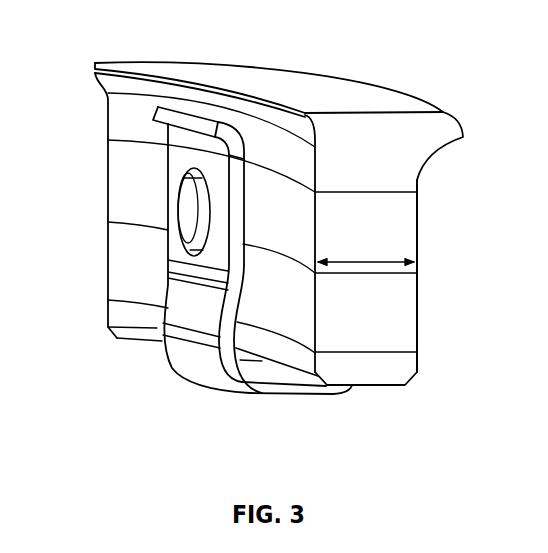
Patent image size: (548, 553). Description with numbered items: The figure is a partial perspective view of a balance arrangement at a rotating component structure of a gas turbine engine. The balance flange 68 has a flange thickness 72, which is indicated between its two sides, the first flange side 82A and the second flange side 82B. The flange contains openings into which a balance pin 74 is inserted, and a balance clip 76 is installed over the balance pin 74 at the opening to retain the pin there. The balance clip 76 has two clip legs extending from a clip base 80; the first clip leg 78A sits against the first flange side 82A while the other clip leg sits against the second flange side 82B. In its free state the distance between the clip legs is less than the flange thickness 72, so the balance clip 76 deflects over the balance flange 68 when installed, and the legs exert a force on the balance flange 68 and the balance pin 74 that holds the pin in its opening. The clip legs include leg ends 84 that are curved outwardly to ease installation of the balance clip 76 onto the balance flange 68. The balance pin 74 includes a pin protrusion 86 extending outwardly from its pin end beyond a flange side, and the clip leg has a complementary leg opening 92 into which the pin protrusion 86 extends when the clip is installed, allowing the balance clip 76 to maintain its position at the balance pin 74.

The balance flange 68 is at (398, 212).
The flange thickness 72 is at (388, 262).
The balance pin 74 is at (185, 203).
The balance clip 76 is at (175, 312).
The first clip leg 78A is at (167, 267).
The clip base 80 is at (303, 388).
The first flange side 82A is at (283, 348).
The second flange side 82B is at (418, 238).
The leg end 84 is at (190, 120).
The pin protrusion 86 is at (185, 218).
The leg opening 92 is at (190, 165).